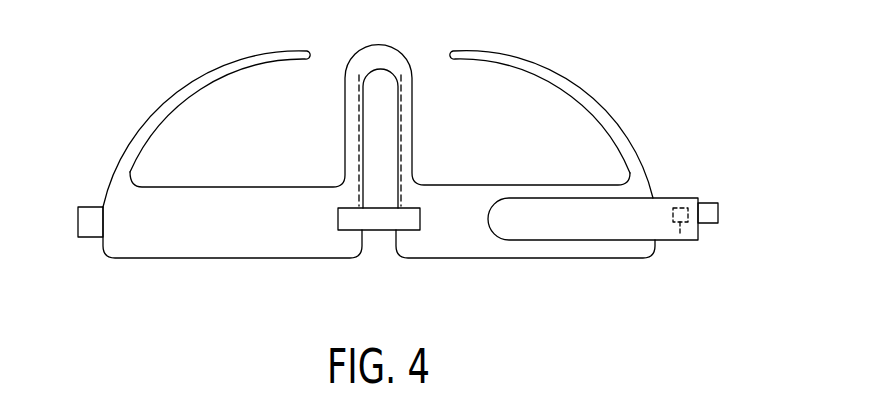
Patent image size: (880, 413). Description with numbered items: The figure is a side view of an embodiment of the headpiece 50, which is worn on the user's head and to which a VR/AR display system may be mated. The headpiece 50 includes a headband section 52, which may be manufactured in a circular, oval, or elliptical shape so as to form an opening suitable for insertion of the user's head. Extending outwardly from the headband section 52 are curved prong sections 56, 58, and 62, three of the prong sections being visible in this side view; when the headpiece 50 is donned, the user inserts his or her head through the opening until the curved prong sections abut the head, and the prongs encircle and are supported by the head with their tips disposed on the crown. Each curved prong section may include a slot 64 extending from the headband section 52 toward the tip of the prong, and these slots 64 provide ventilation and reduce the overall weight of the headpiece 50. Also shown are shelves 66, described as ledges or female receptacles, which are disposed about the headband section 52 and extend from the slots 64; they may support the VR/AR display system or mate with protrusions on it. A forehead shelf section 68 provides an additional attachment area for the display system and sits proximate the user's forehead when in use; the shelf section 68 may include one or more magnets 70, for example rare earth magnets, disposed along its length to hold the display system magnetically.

The headpiece 50 is at (691, 126).
The headband section 52 is at (253, 229).
The curved prong section 56 is at (360, 147).
The curved prong section 58 is at (197, 88).
The curved prong section 62 is at (580, 102).
The slot 64 is at (377, 128).
The ledges or female receptacles 66 is at (82, 223).
The forehead shelf section 68 is at (592, 231).
The magnet 70 is at (680, 241).